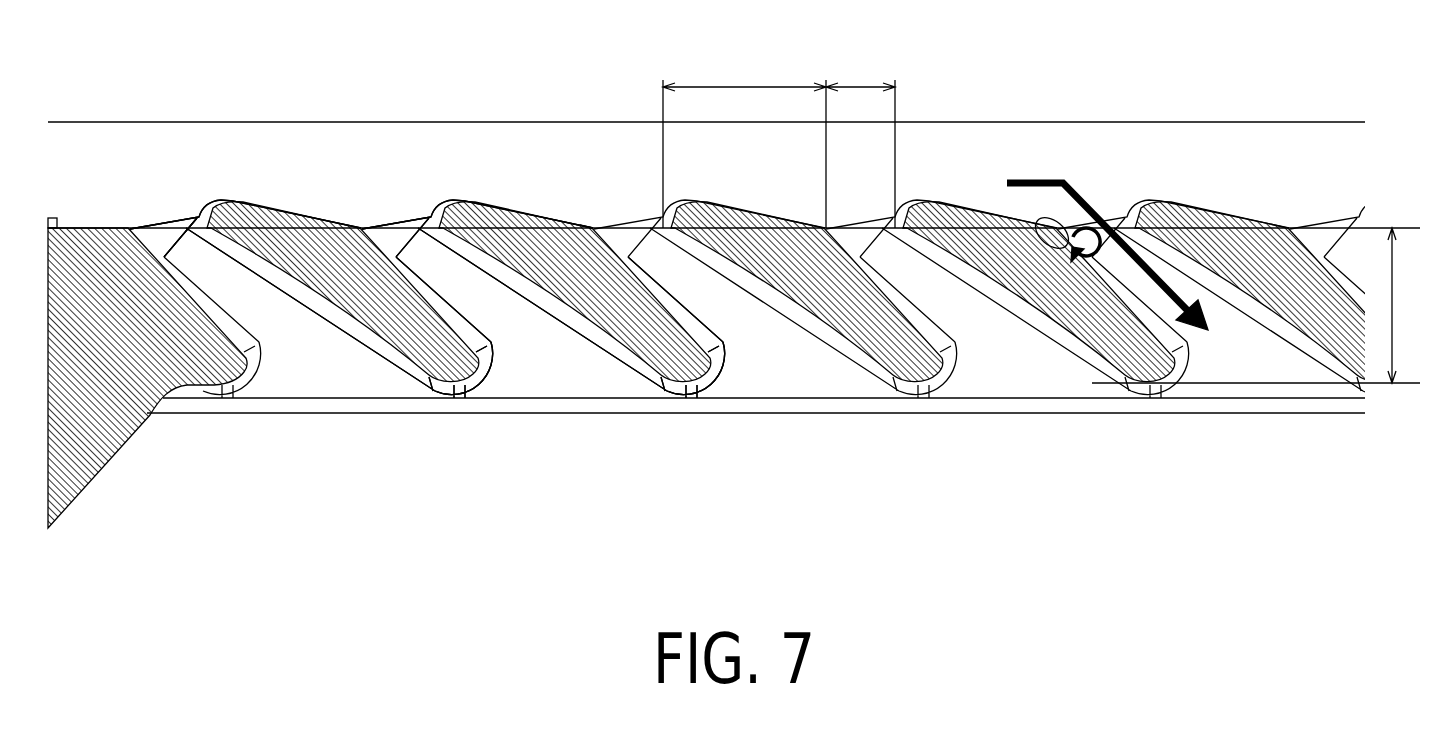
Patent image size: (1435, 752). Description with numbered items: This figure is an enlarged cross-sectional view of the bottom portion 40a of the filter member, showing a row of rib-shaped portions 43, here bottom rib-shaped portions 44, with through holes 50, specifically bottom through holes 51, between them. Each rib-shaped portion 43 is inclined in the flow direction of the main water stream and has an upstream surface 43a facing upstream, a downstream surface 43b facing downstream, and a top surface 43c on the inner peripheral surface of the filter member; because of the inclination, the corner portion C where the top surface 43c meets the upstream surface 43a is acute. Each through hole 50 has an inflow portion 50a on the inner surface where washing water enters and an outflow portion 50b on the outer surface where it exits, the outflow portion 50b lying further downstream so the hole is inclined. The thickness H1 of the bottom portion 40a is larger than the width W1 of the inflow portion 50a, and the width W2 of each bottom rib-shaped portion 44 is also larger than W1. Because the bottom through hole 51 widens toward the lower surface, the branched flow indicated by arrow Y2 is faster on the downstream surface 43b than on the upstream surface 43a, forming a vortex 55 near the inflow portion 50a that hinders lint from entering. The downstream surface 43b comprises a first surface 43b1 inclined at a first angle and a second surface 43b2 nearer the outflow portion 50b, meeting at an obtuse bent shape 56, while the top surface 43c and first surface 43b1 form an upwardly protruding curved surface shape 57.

The bottom portion 40a is at (985, 408).
The rib-shaped portion 43 is at (427, 376).
The bottom rib-shaped portion 44 is at (620, 317).
The upstream surface 43a is at (590, 332).
The downstream surface 43b is at (280, 212).
The first surface 43b1 is at (530, 210).
The second surface 43b2 is at (612, 248).
The top surface 43c is at (214, 203).
The corner portion C is at (228, 225).
The through hole 50 is at (455, 390).
The bottom through hole 51 is at (517, 333).
The inflow portion 50a is at (157, 220).
The outflow portion 50b is at (310, 380).
The vortex 55 is at (1073, 213).
The bent shape 56 is at (1043, 220).
The curved surface shape 57 is at (897, 217).
The arrow Y2 is at (1140, 250).
The width W1 is at (860, 143).
The width W2 is at (744, 143).
The thickness H1 is at (1258, 305).